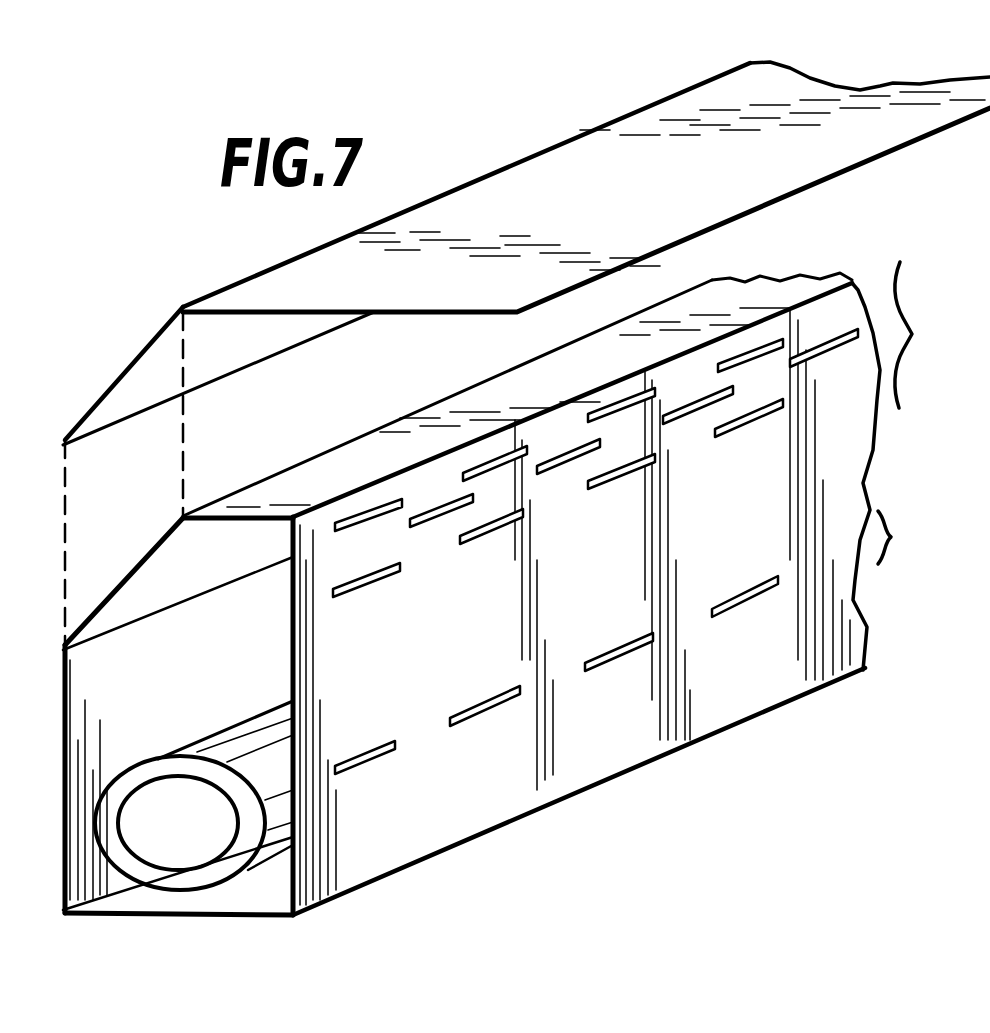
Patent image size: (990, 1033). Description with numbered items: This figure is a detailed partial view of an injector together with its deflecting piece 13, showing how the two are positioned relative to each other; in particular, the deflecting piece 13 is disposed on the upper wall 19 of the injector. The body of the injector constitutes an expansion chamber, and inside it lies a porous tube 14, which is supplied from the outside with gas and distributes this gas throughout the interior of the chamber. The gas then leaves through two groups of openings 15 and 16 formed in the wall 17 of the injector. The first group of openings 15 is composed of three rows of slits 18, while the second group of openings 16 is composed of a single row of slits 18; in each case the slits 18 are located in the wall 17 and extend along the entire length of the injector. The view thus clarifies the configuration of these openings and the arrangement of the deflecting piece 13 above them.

The deflecting piece 13 is at (605, 224).
The porous tube 14 is at (177, 732).
The first group of openings 15 is at (926, 335).
The second group of openings 16 is at (907, 539).
The wall of the injector 17 is at (410, 813).
The slits 18 is at (640, 468).
The upper wall of the injector 19 is at (364, 468).